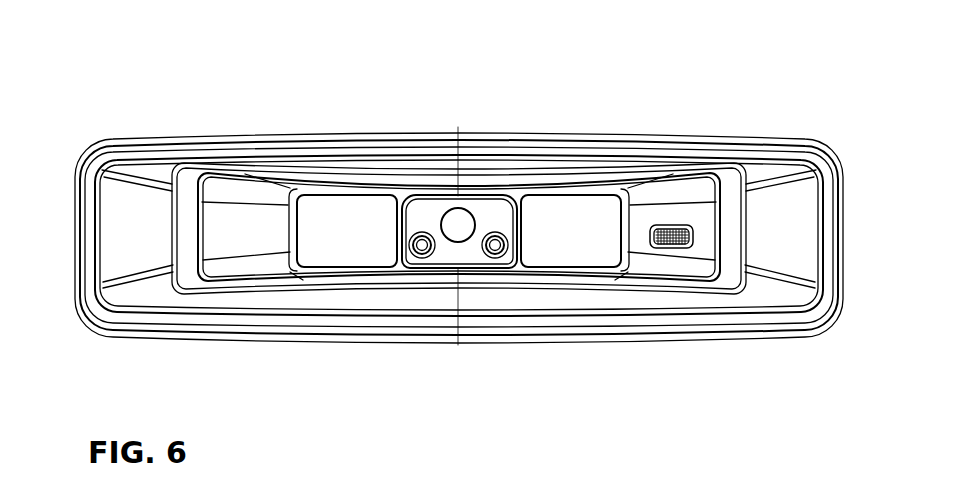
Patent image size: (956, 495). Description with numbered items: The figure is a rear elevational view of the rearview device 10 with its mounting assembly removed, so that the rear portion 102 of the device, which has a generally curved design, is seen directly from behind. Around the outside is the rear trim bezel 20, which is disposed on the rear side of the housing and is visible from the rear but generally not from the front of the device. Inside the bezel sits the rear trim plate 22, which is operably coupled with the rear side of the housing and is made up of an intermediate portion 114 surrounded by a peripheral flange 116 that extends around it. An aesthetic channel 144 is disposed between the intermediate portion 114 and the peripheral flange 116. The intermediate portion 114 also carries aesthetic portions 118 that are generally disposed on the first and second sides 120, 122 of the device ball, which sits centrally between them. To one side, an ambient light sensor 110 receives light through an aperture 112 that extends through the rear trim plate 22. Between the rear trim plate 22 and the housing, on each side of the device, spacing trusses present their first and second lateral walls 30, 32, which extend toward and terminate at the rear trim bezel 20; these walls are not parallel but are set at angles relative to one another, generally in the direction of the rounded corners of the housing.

The rearview device 10 is at (713, 100).
The rear trim bezel 20 is at (832, 152).
The rear trim plate 22 is at (260, 265).
The first lateral wall 30 is at (108, 152).
The second lateral wall 32 is at (143, 277).
The rear portion 102 is at (748, 287).
The ambient light sensor 110 is at (677, 230).
The aperture 112 is at (655, 250).
The intermediate portion 114 is at (305, 172).
The peripheral flange 116 is at (242, 172).
The aesthetic portions 118 is at (382, 203).
The first side 120 is at (338, 233).
The second side 122 is at (544, 233).
The aesthetic channel 144 is at (673, 278).